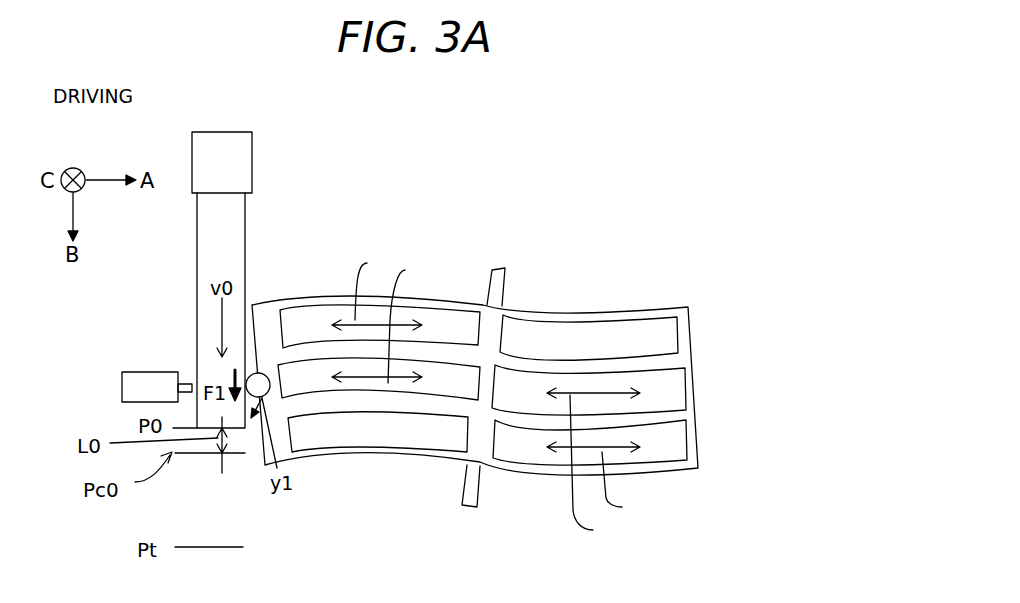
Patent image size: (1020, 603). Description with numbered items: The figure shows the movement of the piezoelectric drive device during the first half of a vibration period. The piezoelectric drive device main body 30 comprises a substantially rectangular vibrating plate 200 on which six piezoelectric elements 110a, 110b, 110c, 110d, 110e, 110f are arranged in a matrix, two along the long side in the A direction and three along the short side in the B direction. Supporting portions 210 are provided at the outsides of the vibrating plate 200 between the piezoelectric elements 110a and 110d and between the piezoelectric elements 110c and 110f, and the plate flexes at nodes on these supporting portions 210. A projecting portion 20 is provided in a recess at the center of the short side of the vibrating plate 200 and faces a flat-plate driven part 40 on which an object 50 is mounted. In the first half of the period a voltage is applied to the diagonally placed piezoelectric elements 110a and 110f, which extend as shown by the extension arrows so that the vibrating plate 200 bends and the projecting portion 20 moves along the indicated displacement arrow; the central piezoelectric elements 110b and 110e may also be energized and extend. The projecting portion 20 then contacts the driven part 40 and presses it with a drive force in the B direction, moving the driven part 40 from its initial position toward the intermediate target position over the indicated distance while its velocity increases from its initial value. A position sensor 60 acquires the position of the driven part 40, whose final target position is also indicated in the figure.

The object 50 is at (235, 132).
The driven part 40 is at (246, 223).
The projecting portion 20 is at (267, 375).
The position sensor 60 is at (150, 372).
The piezoelectric drive device main body 30 is at (728, 271).
The vibrating plate 200 is at (653, 309).
The supporting portions 210 is at (505, 270).
The piezoelectric element 110a is at (432, 300).
The piezoelectric element 110b is at (388, 388).
The piezoelectric element 110c is at (317, 438).
The piezoelectric element 110d is at (513, 333).
The piezoelectric element 110e is at (588, 380).
The piezoelectric element 110f is at (667, 455).